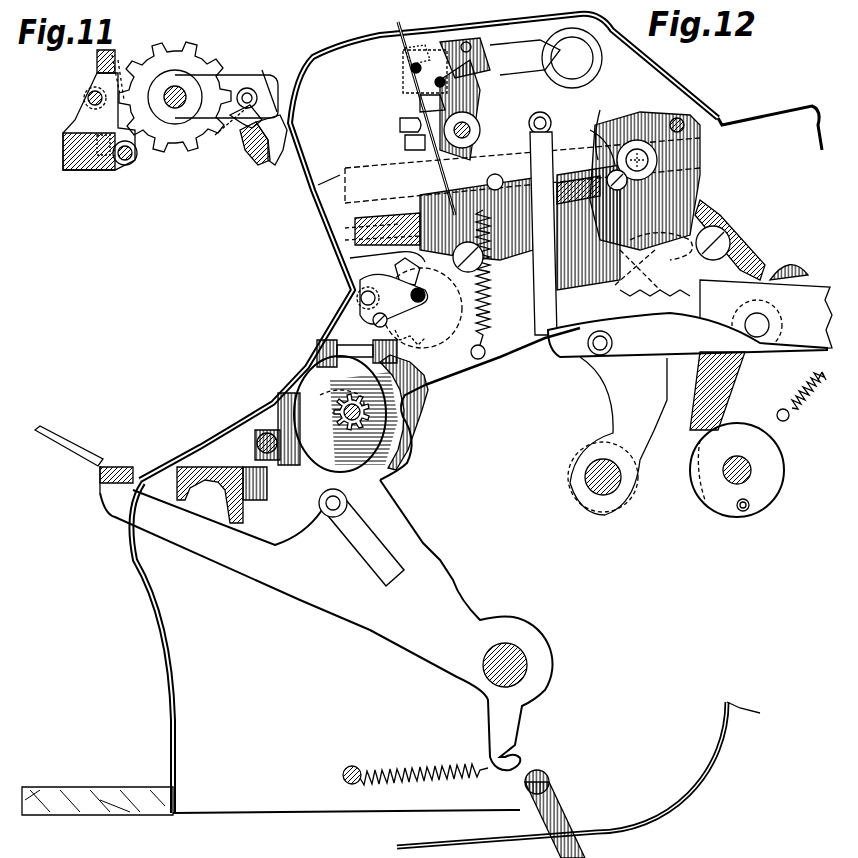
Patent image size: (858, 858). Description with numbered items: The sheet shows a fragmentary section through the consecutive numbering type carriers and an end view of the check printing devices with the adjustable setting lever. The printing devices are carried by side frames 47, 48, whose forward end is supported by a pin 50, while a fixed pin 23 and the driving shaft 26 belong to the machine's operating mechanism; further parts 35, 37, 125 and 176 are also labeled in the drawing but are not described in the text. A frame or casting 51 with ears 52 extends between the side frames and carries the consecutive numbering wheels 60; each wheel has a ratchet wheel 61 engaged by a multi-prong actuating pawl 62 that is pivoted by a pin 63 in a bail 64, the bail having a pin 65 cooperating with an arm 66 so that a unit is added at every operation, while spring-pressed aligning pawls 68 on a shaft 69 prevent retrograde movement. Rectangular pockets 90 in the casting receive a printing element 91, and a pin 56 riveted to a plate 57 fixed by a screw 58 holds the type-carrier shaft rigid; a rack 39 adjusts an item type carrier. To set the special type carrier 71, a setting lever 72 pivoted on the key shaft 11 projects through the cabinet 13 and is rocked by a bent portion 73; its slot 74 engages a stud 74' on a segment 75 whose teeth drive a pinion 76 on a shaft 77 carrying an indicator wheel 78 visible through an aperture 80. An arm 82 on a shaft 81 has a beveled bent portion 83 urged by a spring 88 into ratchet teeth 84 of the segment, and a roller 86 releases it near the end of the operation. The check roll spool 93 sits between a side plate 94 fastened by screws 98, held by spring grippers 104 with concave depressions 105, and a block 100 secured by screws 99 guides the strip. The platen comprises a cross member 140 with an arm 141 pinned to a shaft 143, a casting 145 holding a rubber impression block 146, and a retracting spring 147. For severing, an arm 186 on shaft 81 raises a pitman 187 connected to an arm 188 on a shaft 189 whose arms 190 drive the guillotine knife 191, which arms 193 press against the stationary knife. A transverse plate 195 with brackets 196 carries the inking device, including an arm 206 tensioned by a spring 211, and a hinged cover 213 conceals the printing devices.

In FIG. 12, the key shaft 11 is at (515, 652).
In FIG. 12, the cabinet 13 is at (205, 452).
In FIG. 12, the fixed pin 23 is at (612, 490).
In FIG. 12, the driving shaft 26 is at (751, 466).
In FIG. 12, the support arm 35 is at (715, 385).
In FIG. 12, the disc 37 is at (784, 470).
In FIG. 12, the rack 39 is at (412, 768).
In FIG. 12, the side frame 47 is at (435, 388).
In FIG. 12, the side frame 48 is at (440, 370).
In FIG. 12, the pin 50 is at (260, 430).
In FIG. 11, the frame or casting 51 is at (85, 165).
In FIG. 12, the frame or casting 51 is at (360, 290).
In FIG. 12, the ears 52 is at (372, 325).
In FIG. 12, the pin 56 is at (470, 352).
In FIG. 12, the plate 57 is at (360, 300).
In FIG. 12, the screw 58 is at (360, 315).
In FIG. 11, the consecutive numbering wheels 60 is at (220, 68).
In FIG. 11, the ratchet wheel 61 is at (200, 60).
In FIG. 11, the multi-prong actuating pawl 62 is at (238, 128).
In FIG. 11, the pin 63 is at (270, 70).
In FIG. 11, the bail 64 is at (260, 85).
In FIG. 11, the pin 65 is at (252, 165).
In FIG. 11, the arm 66 is at (280, 155).
In FIG. 11, the aligning pawls 68 is at (132, 156).
In FIG. 11, the shaft 69 is at (137, 160).
In FIG. 12, the type carrier 71 is at (407, 271).
In FIG. 12, the setting lever 72 is at (326, 618).
In FIG. 12, the bent portion 73 is at (78, 450).
In FIG. 12, the slot 74 is at (375, 540).
In FIG. 12, the stud 74' is at (313, 497).
In FIG. 12, the segment 75 is at (410, 440).
In FIG. 12, the pinion 76 is at (290, 393).
In FIG. 12, the shaft 77 is at (335, 412).
In FIG. 12, the indicator wheel 78 is at (361, 413).
In FIG. 12, the aperture 80 is at (338, 345).
In FIG. 12, the shaft 81 is at (769, 325).
In FIG. 12, the arm 82 is at (661, 253).
In FIG. 12, the bent portion 83 is at (632, 270).
In FIG. 12, the ratchet teeth 84 is at (659, 299).
In FIG. 12, the roller 86 is at (750, 505).
In FIG. 12, the spring 88 is at (790, 395).
In FIG. 11, the rectangular pockets 90 is at (118, 60).
In FIG. 11, the printing element 91 is at (97, 70).
In FIG. 12, the spool 93 is at (685, 128).
In FIG. 12, the side plate 94 is at (645, 118).
In FIG. 12, the screws 98 is at (478, 95).
In FIG. 12, the screws 99 is at (595, 140).
In FIG. 12, the block 100 is at (578, 201).
In FIG. 12, the spring grippers 104 is at (500, 50).
In FIG. 12, the concave depressions 105 is at (590, 68).
In FIG. 12, the lug 125 is at (795, 268).
In FIG. 12, the cross member 140 is at (372, 190).
In FIG. 12, the arm 141 is at (592, 127).
In FIG. 12, the shaft 143 is at (650, 160).
In FIG. 12, the casting 145 is at (350, 230).
In FIG. 12, the rubber impression block 146 is at (350, 244).
In FIG. 12, the spring 147 is at (492, 290).
In FIG. 11, the pin 176 is at (84, 100).
In FIG. 12, the pin 176 is at (357, 298).
In FIG. 12, the arm 186 is at (687, 335).
In FIG. 12, the pitman 187 is at (557, 300).
In FIG. 12, the arm 188 is at (525, 118).
In FIG. 12, the shaft 189 is at (418, 100).
In FIG. 12, the arms 190 is at (400, 126).
In FIG. 12, the guillotine knife 191 is at (405, 142).
In FIG. 12, the arms 193 is at (350, 260).
In FIG. 12, the transverse plate 195 is at (455, 138).
In FIG. 12, the brackets 196 is at (425, 71).
In FIG. 12, the arm 206 is at (408, 78).
In FIG. 12, the spring 211 is at (398, 62).
In FIG. 12, the hinged cover 213 is at (318, 190).